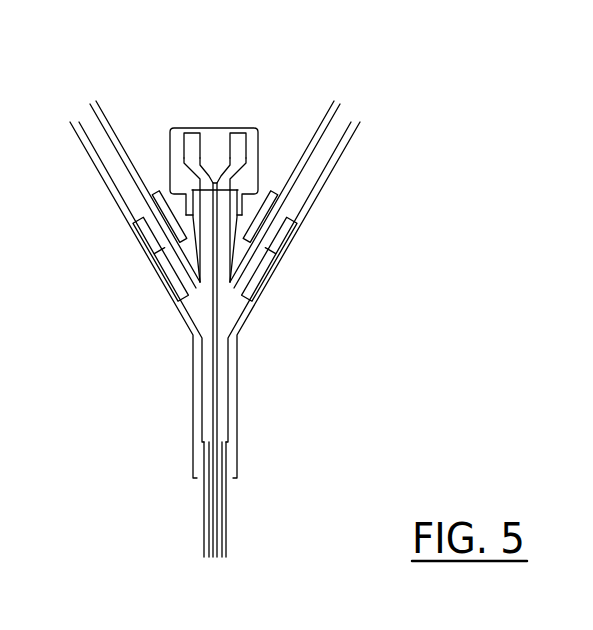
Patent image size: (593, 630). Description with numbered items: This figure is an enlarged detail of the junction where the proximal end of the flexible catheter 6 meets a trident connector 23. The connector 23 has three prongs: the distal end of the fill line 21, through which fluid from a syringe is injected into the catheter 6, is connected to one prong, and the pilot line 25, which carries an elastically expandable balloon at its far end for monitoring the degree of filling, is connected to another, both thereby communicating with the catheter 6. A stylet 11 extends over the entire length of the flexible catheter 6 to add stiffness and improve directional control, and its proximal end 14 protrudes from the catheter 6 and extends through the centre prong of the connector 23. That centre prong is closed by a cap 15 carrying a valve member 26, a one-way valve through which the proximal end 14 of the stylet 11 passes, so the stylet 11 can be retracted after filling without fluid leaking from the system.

The flexible catheter 6 is at (227, 490).
The stylet 11 is at (218, 423).
The proximal end of the stylet 14 is at (221, 170).
The cap 15 is at (178, 187).
The fill line 21 is at (107, 122).
The trident connector 23 is at (252, 318).
The pilot line 25 is at (318, 152).
The valve member 26 is at (237, 168).